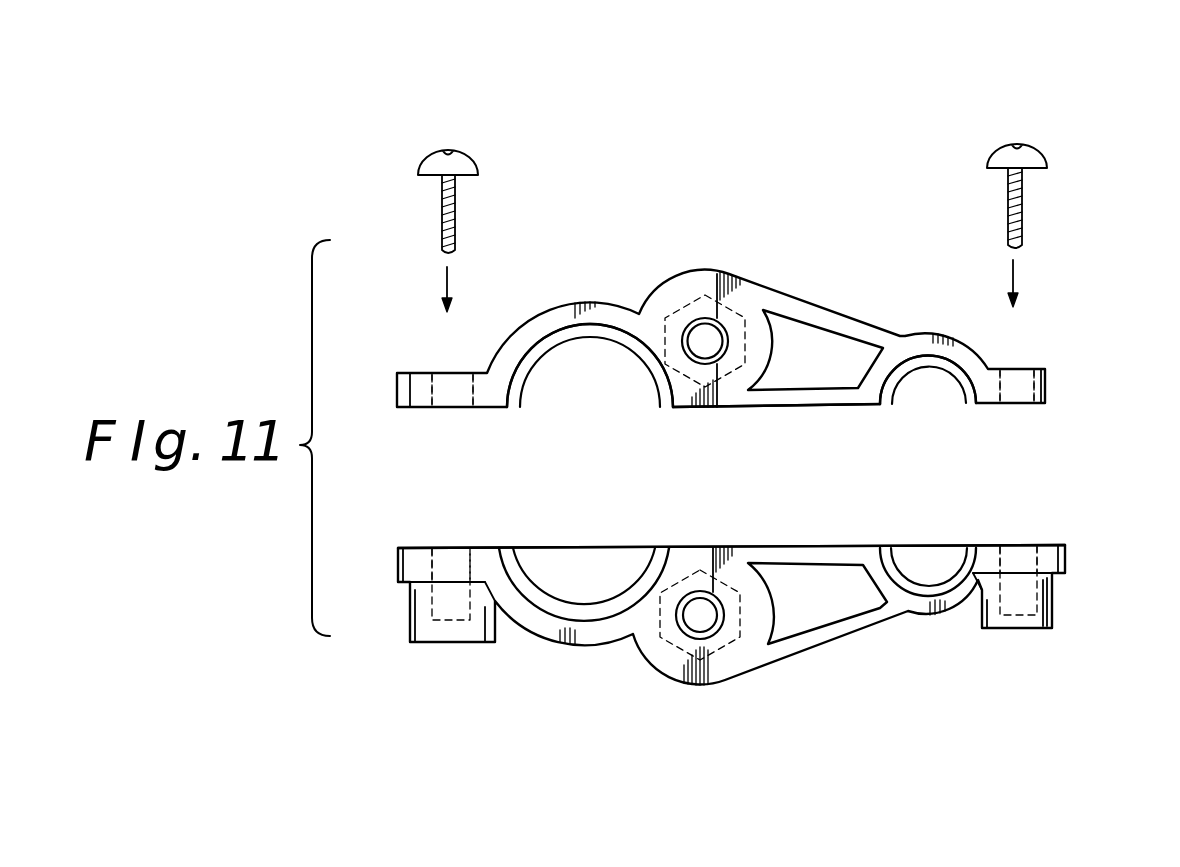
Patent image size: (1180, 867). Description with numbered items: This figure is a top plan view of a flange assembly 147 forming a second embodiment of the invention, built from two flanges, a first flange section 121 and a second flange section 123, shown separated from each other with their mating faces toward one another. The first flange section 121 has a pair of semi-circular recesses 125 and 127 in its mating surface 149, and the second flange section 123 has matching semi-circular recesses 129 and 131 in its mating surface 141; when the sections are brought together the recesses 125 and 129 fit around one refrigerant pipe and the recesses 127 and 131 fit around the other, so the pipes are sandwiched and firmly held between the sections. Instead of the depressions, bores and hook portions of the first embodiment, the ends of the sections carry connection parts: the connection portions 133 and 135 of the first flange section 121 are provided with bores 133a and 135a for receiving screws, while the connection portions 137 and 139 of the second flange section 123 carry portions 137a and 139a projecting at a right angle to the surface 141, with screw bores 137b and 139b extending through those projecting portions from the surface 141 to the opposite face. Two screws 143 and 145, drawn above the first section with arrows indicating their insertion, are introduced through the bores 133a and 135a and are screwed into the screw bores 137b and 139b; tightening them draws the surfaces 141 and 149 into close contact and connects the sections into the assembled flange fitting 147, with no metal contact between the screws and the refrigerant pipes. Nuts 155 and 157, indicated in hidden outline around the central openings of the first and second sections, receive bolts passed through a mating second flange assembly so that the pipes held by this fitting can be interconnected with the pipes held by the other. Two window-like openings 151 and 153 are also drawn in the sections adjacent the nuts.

The flange assembly 147 is at (705, 137).
The flange section 121 is at (717, 274).
The flange section 123 is at (727, 686).
The semi-circular recess 125 is at (588, 343).
The semi-circular recess 127 is at (925, 372).
The semi-circular recess 129 is at (580, 607).
The semi-circular recess 131 is at (930, 578).
The connection portion 133 is at (397, 390).
The bore 133a is at (450, 388).
The connection portion 135 is at (1047, 388).
The bore 135a is at (1015, 377).
The connection portion 137 is at (398, 563).
The projecting portion 137a is at (455, 647).
The screw bore 137b is at (445, 605).
The connection portion 139 is at (1067, 552).
The projecting portion 139a is at (1003, 628).
The screw bore 139b is at (1030, 598).
The surface 141 is at (773, 547).
The screw 143 is at (440, 208).
The screw 145 is at (1023, 200).
The surface 149 is at (745, 398).
The window opening in upper half 151 is at (750, 297).
The window opening in lower half 153 is at (752, 644).
The nut 155 is at (650, 305).
The nut 157 is at (668, 672).